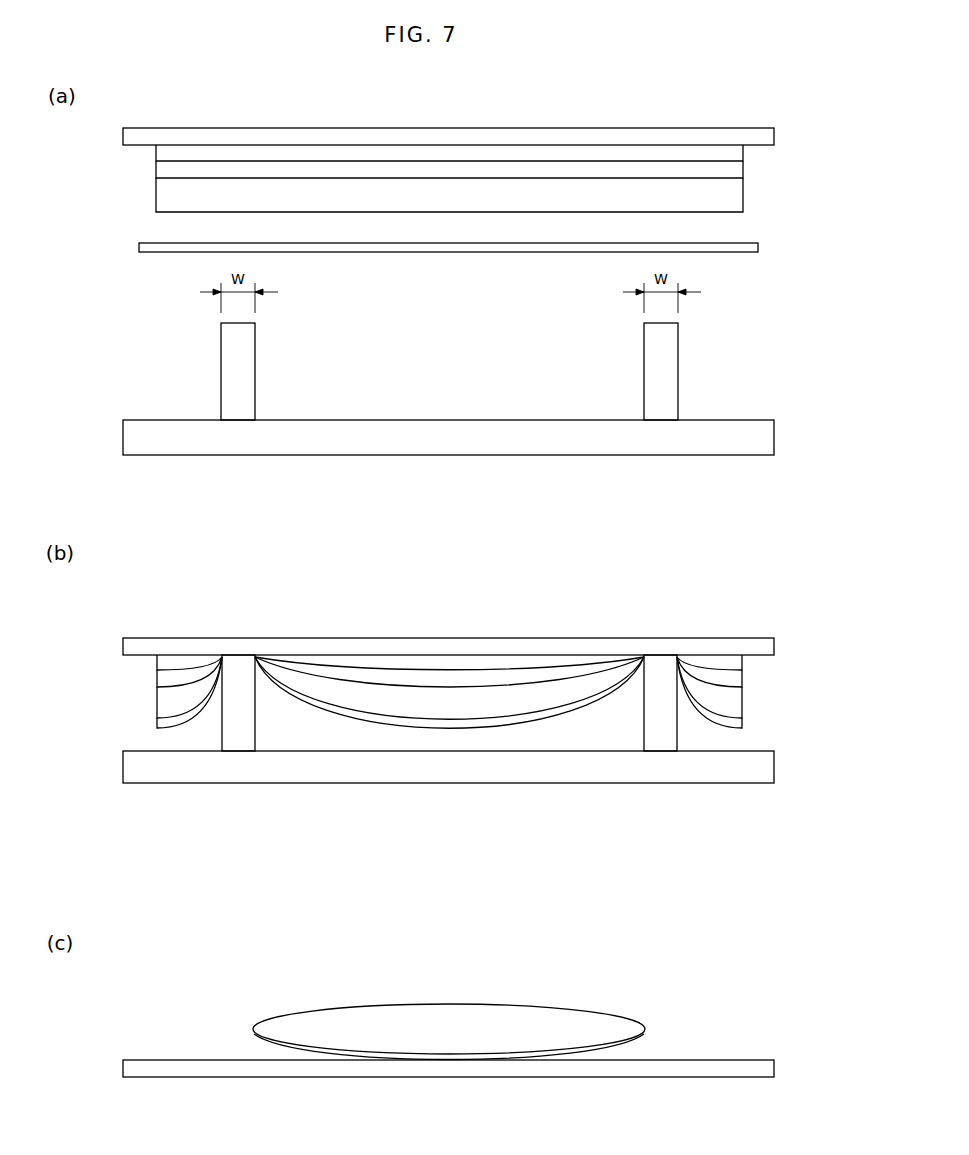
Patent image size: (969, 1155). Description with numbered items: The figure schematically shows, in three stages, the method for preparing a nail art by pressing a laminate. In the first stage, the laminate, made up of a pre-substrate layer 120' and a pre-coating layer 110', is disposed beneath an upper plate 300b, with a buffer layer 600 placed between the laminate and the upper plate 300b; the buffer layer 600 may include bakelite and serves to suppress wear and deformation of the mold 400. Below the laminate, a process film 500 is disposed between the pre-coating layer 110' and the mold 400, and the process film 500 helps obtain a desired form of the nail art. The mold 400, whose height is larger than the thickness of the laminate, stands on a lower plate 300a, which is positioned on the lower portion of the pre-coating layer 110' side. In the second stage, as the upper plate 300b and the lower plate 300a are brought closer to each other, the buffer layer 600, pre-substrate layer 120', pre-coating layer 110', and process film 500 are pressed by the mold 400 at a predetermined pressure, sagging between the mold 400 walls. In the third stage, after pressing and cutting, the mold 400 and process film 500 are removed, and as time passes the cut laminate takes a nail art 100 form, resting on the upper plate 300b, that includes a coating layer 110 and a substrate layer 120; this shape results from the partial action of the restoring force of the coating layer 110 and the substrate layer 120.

The upper plate 300b is at (776, 140).
The lower plate 300a is at (776, 440).
The buffer layer 600 is at (156, 152).
The pre-substrate layer 120' is at (401, 425).
The pre-coating layer 110' is at (401, 448).
The process film 500 is at (139, 247).
The mold 400 is at (238, 404).
The nail art 100 is at (449, 989).
The coating layer 110 is at (449, 1007).
The substrate layer 120 is at (449, 1010).